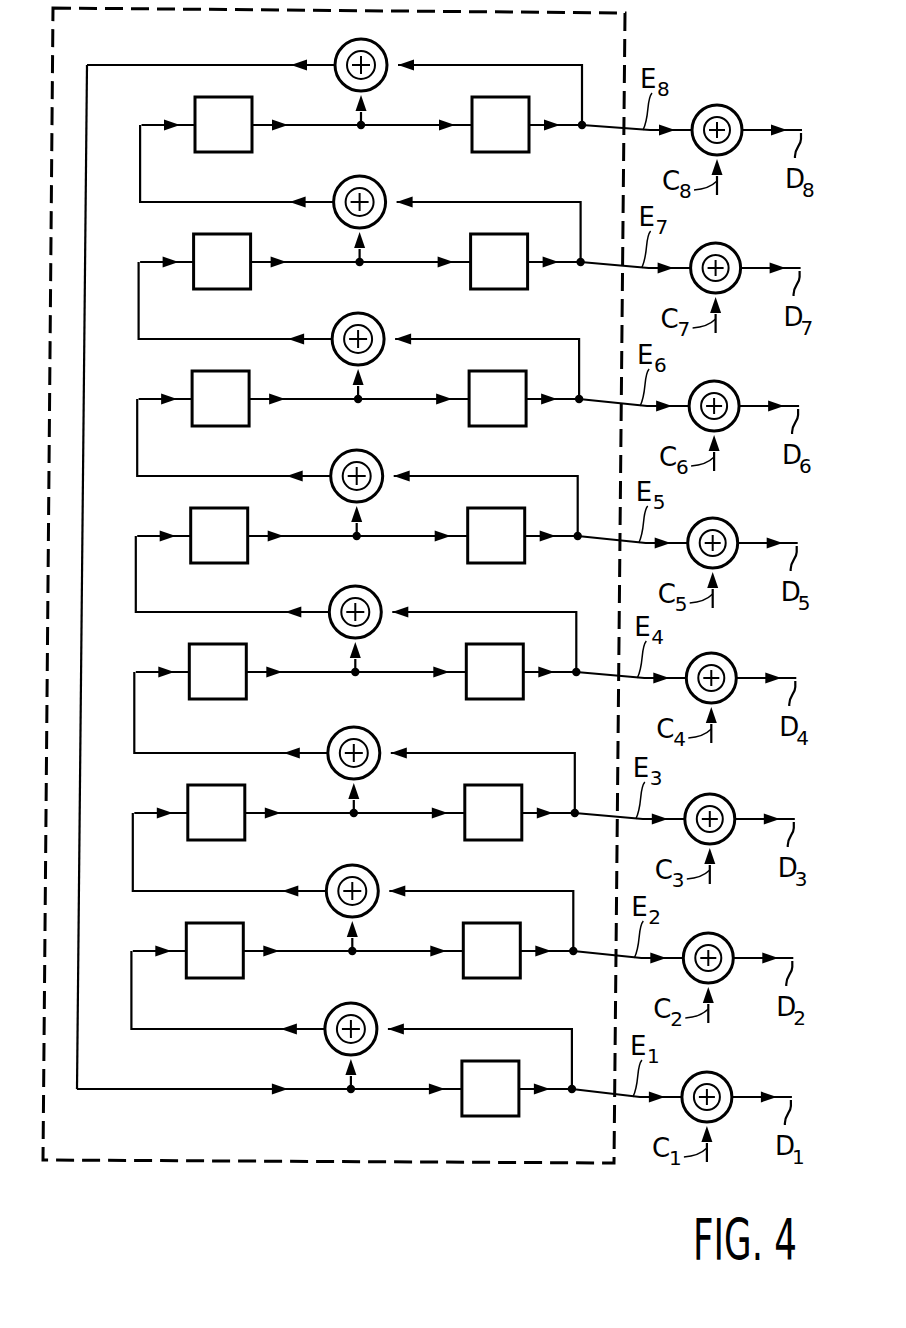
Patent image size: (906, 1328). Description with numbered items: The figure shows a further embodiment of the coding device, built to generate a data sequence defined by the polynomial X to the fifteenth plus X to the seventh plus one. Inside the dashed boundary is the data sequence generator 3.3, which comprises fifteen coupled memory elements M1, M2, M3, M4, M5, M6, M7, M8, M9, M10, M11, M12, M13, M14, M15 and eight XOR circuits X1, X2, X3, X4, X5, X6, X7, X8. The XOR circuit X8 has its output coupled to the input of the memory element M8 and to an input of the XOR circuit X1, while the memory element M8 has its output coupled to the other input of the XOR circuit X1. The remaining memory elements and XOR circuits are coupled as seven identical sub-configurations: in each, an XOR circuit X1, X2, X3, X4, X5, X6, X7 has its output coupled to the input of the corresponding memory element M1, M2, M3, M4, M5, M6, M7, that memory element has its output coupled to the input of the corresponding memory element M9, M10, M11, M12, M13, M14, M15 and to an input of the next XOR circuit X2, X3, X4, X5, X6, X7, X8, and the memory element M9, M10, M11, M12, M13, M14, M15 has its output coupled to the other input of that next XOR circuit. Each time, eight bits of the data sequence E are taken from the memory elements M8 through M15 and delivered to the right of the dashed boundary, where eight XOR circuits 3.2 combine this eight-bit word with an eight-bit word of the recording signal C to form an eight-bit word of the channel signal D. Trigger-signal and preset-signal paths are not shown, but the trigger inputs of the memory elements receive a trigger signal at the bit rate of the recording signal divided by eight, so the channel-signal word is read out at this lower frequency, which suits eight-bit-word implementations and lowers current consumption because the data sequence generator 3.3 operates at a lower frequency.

The data sequence generator 3.3 is at (627, 23).
The XOR circuits 3.2 is at (736, 596).
The XOR circuit X1 is at (380, 1016).
The XOR circuit X2 is at (381, 878).
The XOR circuit X3 is at (383, 740).
The XOR circuit X4 is at (384, 599).
The XOR circuit X5 is at (386, 463).
The XOR circuit X6 is at (387, 326).
The XOR circuit X7 is at (389, 189).
The XOR circuit X8 is at (390, 52).
The memory element M1 is at (214, 950).
The memory element M2 is at (216, 812).
The memory element M3 is at (217, 671).
The memory element M4 is at (219, 535).
The memory element M5 is at (220, 398).
The memory element M6 is at (222, 261).
The memory element M7 is at (223, 124).
The memory element M8 is at (490, 1088).
The memory element M9 is at (491, 950).
The memory element M10 is at (493, 812).
The memory element M11 is at (494, 671).
The memory element M12 is at (496, 535).
The memory element M13 is at (497, 398).
The memory element M14 is at (499, 261).
The memory element M15 is at (500, 124).